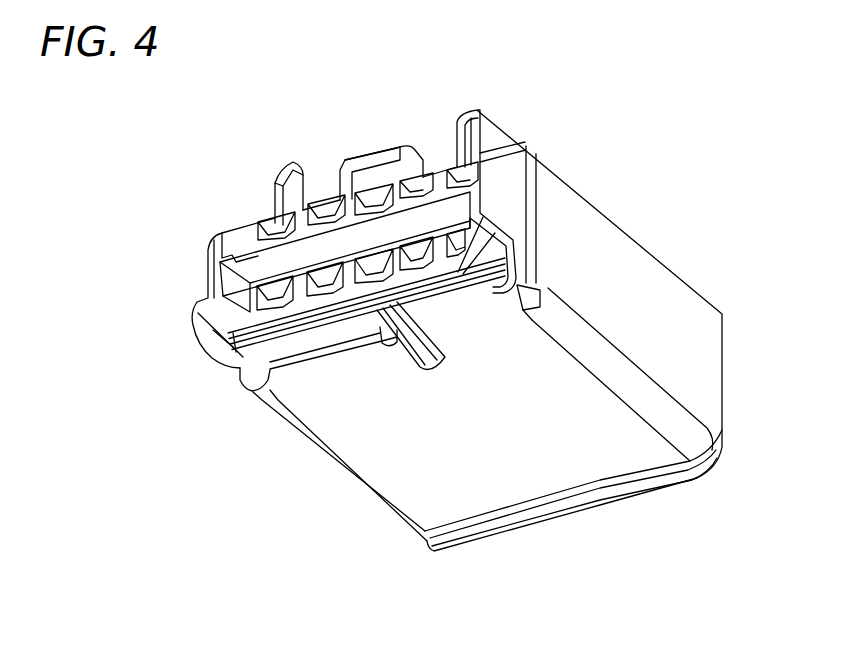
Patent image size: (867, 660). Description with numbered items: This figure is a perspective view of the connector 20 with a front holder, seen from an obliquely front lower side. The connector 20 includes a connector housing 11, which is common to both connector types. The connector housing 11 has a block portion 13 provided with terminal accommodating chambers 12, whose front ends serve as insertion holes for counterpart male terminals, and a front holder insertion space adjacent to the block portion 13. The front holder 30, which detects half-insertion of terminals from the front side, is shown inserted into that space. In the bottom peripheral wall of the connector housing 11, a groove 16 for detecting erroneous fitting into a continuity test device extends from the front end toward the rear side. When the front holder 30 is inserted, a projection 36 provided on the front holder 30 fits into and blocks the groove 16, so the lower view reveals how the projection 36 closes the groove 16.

The connector housing 11 is at (662, 300).
The terminal accommodating chambers 12 is at (330, 182).
The block portion 13 is at (306, 195).
The groove for detecting erroneous fitting 16 is at (418, 377).
The connector with a front holder 20 is at (654, 218).
The front holder 30 is at (196, 302).
The projection 36 is at (402, 347).